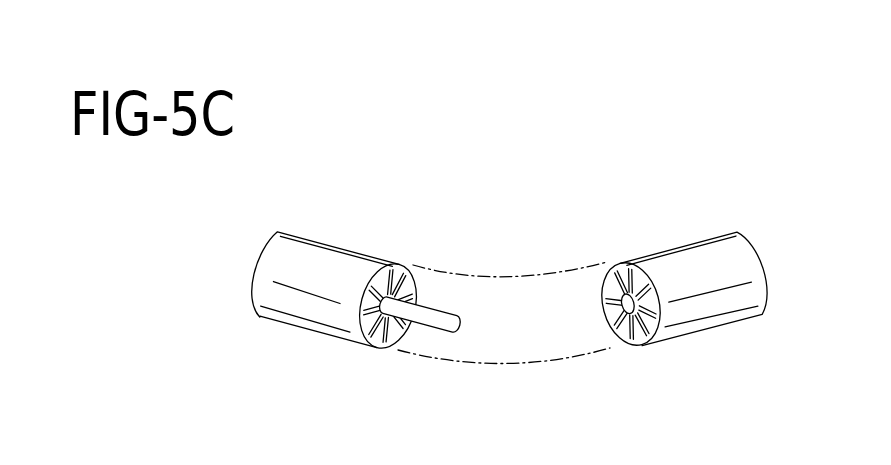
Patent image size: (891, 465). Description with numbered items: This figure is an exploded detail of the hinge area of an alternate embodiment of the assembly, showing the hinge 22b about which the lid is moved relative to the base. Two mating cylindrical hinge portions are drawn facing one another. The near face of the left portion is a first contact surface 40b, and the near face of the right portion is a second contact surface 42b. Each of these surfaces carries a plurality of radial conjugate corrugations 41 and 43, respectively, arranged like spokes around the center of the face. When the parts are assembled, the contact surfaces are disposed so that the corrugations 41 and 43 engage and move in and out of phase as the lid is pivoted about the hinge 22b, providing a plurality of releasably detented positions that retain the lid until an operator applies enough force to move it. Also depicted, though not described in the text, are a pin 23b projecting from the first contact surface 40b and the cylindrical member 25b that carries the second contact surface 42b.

The hinge 22b is at (571, 160).
The shaft 23b is at (433, 305).
The tube 25b is at (714, 256).
The first contact surface 40b is at (403, 266).
The radial conjugate corrugations 41 is at (384, 348).
The second contact surface 42b is at (614, 262).
The radial conjugate corrugations 43 is at (623, 338).